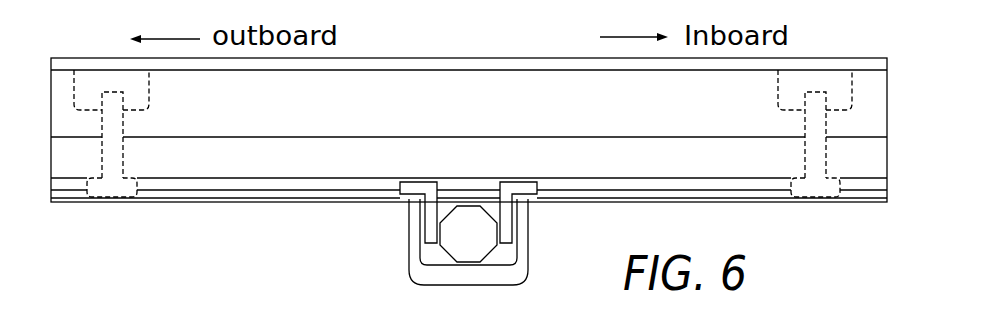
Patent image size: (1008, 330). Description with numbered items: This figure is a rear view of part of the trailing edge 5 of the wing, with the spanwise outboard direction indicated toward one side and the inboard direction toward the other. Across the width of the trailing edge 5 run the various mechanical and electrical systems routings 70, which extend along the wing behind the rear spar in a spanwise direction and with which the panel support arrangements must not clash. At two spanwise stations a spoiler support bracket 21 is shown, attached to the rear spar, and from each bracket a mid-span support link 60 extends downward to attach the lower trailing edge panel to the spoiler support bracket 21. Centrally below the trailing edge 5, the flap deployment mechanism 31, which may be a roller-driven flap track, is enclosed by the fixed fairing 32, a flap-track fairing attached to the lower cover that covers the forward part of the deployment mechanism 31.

The trailing edge 5 is at (274, 231).
The spoiler support bracket 21 is at (88, 90).
The deployment mechanism 31 is at (472, 218).
The fixed fairing 32 is at (525, 247).
The mid-span support link 60 is at (116, 162).
The systems routings 70 is at (643, 158).